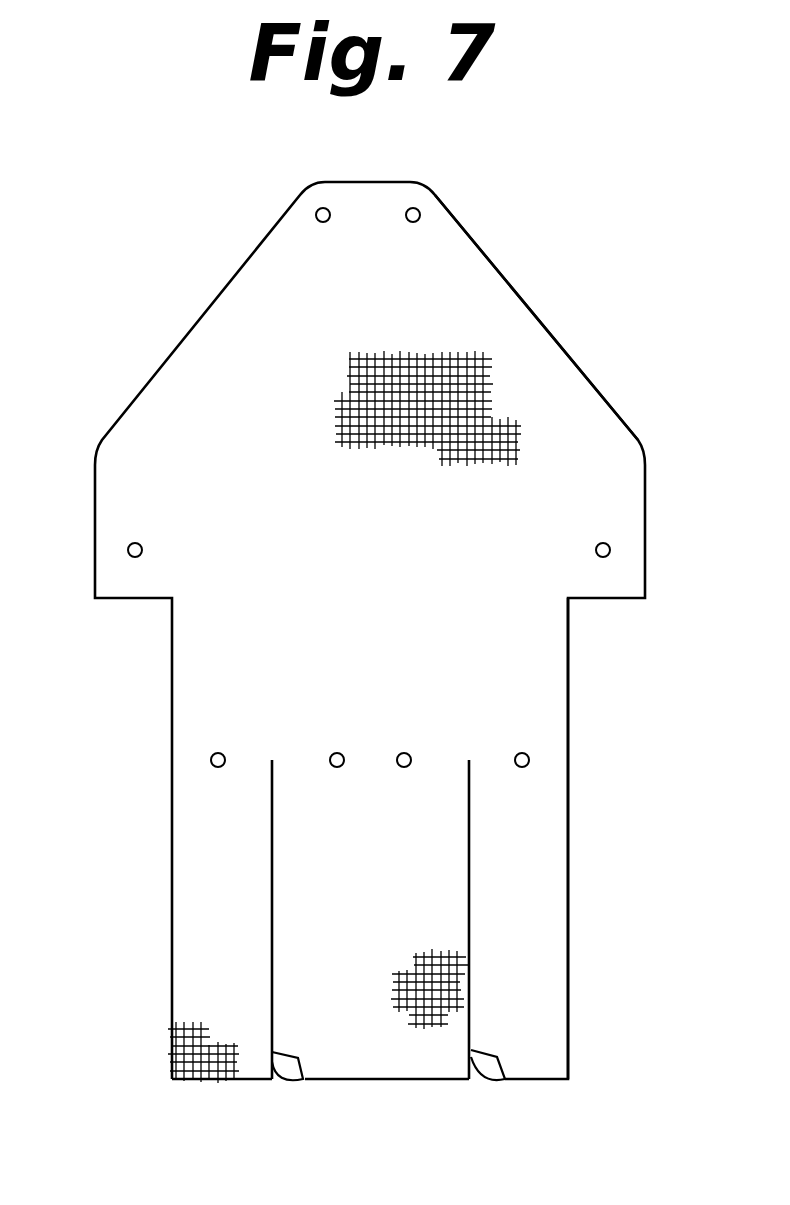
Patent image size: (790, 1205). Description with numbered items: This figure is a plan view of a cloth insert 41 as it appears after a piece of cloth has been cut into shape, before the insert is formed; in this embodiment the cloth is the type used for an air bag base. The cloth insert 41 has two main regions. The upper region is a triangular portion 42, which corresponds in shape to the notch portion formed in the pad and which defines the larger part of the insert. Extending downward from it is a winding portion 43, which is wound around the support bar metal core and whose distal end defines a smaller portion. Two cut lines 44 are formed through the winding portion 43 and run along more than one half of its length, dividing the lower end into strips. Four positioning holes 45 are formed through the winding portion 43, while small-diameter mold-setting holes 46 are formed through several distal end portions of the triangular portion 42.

The cloth insert 41 is at (576, 275).
The triangular portion 42 is at (608, 412).
The winding portion 43 is at (557, 948).
The cut lines 44 is at (272, 1037).
The positioning holes 45 is at (211, 760).
The mold-setting holes 46 is at (323, 207).